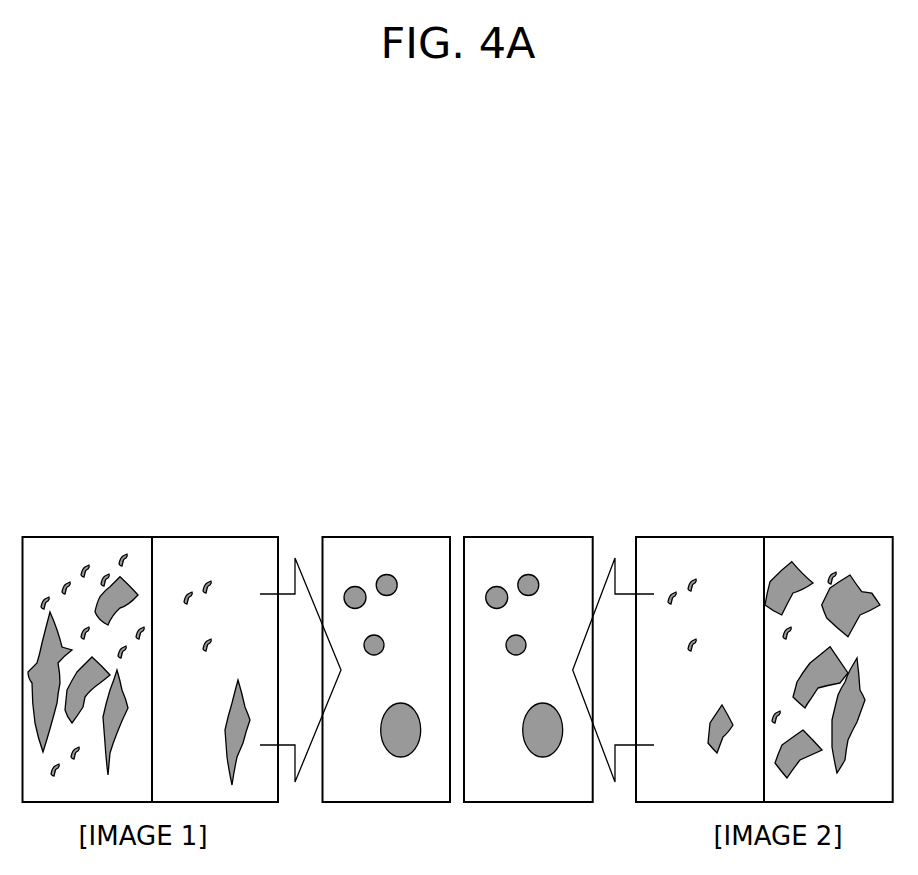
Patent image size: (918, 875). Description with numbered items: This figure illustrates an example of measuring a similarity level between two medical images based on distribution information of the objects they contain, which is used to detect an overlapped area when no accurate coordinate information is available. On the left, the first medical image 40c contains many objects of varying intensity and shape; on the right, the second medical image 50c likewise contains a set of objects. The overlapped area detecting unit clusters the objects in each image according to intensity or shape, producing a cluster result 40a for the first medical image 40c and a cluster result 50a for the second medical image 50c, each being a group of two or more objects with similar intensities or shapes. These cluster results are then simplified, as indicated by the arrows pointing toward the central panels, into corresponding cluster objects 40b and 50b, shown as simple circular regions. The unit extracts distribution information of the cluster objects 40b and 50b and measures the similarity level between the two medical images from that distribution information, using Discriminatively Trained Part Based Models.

The cluster result 40a is at (205, 578).
The cluster object 40b is at (378, 573).
The medical image 1 40c is at (246, 792).
The cluster result 50a is at (687, 577).
The cluster object 50b is at (519, 573).
The medical image 2 50c is at (670, 793).